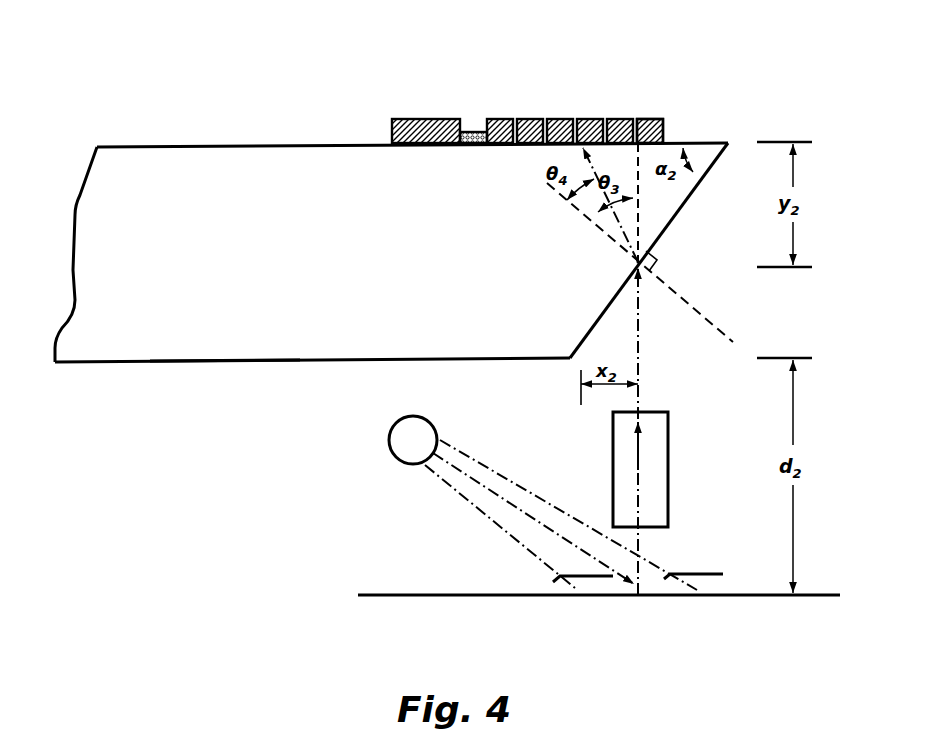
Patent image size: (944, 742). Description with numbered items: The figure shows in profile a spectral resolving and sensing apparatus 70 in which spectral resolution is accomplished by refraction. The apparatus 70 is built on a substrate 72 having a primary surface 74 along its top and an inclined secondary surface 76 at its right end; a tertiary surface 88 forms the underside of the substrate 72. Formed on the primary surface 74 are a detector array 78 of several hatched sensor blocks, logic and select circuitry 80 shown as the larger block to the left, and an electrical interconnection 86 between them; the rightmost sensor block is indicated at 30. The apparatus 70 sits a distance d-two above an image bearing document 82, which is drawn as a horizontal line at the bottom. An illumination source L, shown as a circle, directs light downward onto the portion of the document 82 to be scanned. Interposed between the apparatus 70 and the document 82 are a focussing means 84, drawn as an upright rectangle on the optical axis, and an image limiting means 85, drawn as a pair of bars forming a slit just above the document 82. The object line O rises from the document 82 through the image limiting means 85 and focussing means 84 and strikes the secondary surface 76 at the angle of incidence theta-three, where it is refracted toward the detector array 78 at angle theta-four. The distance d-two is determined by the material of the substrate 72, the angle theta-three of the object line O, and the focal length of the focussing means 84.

The spectral resolving and sensing apparatus 70 is at (145, 61).
The primary surface 74 is at (290, 140).
The substrate 72 is at (152, 348).
The tertiary surface 88 is at (223, 364).
The secondary surface 76 is at (692, 199).
The logic and select circuitry 80 is at (415, 118).
The electrical interconnection 86 is at (472, 131).
The detector array 78 is at (497, 107).
The sensor chip 30 is at (664, 118).
The focussing means 84 is at (668, 494).
The image limiting means 85 is at (695, 573).
The image bearing document 82 is at (416, 594).
The illumination source L is at (391, 452).
The object line O is at (650, 293).